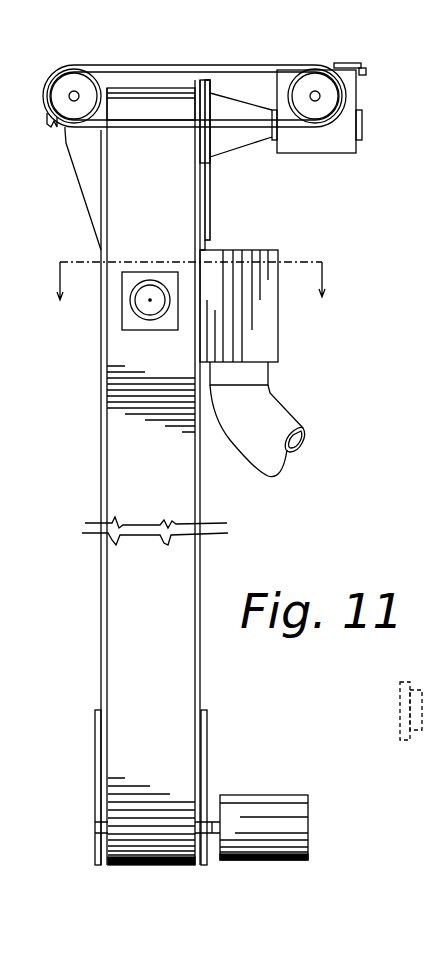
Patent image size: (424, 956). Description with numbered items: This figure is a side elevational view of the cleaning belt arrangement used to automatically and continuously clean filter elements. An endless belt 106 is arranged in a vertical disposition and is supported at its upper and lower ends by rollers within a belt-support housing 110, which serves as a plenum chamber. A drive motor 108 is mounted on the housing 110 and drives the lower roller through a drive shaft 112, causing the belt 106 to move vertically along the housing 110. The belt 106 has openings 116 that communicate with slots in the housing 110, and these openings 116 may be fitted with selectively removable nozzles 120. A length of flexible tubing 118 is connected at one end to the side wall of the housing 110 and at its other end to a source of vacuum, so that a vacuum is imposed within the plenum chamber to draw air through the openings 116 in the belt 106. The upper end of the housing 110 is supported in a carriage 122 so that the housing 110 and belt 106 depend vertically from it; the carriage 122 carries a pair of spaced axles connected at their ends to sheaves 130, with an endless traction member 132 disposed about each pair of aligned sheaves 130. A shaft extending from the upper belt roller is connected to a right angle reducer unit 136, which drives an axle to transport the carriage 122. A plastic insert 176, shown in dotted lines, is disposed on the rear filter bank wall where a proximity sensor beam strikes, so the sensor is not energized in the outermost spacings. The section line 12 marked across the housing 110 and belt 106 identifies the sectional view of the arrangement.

The support legs 106 is at (183, 558).
The base unit 108 is at (272, 795).
The vertical housing column 110 is at (200, 488).
The connector 112 is at (213, 822).
The bearing 116 is at (143, 297).
The discharge spout 118 is at (290, 422).
The housing plate 120 is at (120, 330).
The drive belt 122 is at (265, 62).
The pulley 130 is at (83, 78).
The mounting bracket 132 is at (238, 130).
The motor housing 136 is at (340, 142).
The control unit 176 is at (422, 680).
The section line 12- 12 is at (190, 296).